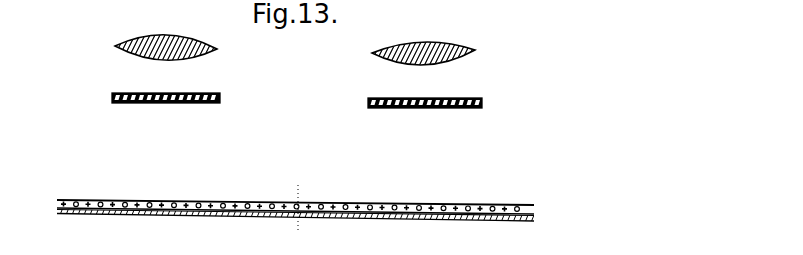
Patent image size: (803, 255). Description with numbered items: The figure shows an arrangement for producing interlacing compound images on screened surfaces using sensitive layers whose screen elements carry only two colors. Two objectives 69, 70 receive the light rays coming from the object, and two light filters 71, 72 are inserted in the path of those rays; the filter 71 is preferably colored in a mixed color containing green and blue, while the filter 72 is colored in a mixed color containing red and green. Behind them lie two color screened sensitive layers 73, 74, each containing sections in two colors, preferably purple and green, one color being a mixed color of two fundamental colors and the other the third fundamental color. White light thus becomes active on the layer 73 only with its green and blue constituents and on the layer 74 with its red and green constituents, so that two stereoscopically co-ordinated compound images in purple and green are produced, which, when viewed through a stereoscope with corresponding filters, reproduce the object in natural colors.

The objective 69 is at (394, 60).
The objective 70 is at (140, 56).
The light filter 71 is at (455, 107).
The light filter 72 is at (132, 103).
The color screened sensitive layer 73 is at (376, 204).
The color screened sensitive layer 74 is at (149, 200).